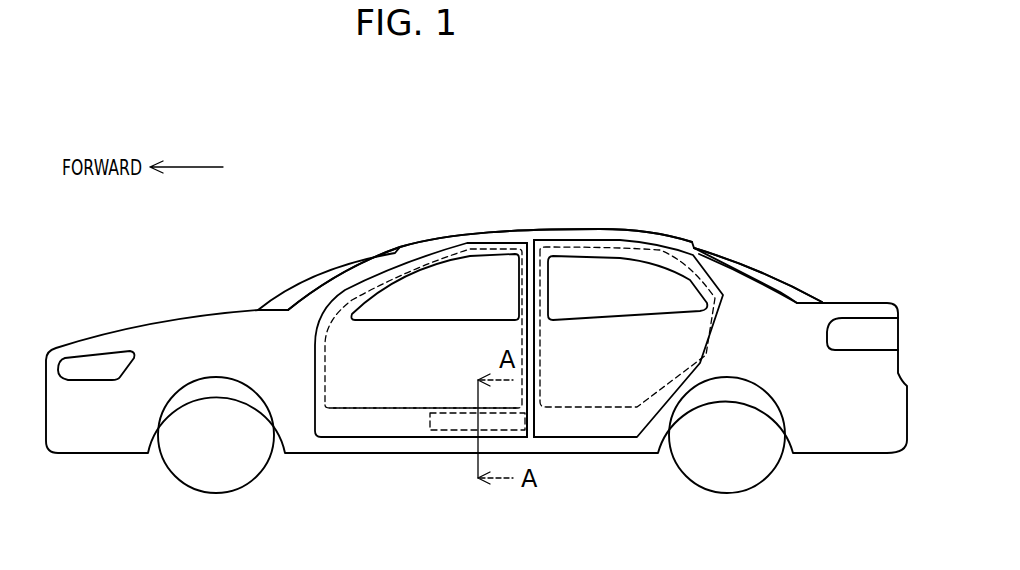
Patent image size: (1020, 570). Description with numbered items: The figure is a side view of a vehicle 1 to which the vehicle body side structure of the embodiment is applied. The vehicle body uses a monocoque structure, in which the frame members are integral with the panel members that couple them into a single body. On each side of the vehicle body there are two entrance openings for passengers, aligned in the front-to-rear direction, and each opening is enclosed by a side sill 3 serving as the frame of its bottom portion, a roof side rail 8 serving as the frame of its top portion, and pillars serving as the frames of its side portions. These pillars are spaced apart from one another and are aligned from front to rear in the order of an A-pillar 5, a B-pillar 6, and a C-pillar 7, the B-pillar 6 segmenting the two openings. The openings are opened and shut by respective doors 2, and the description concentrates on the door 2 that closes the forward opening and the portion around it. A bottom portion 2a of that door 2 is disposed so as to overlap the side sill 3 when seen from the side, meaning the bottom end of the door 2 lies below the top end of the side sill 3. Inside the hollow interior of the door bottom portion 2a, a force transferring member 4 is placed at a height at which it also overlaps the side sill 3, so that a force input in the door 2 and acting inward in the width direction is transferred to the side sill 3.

The vehicle 1 is at (400, 204).
The door 2 is at (416, 371).
The door bottom portion 2a is at (395, 425).
The side sill 3 is at (343, 422).
The force transferring member 4 is at (448, 423).
The A-pillar 5 is at (352, 277).
The B-pillar 6 is at (545, 285).
The C-pillar 7 is at (703, 262).
The roof side rail 8 is at (488, 238).